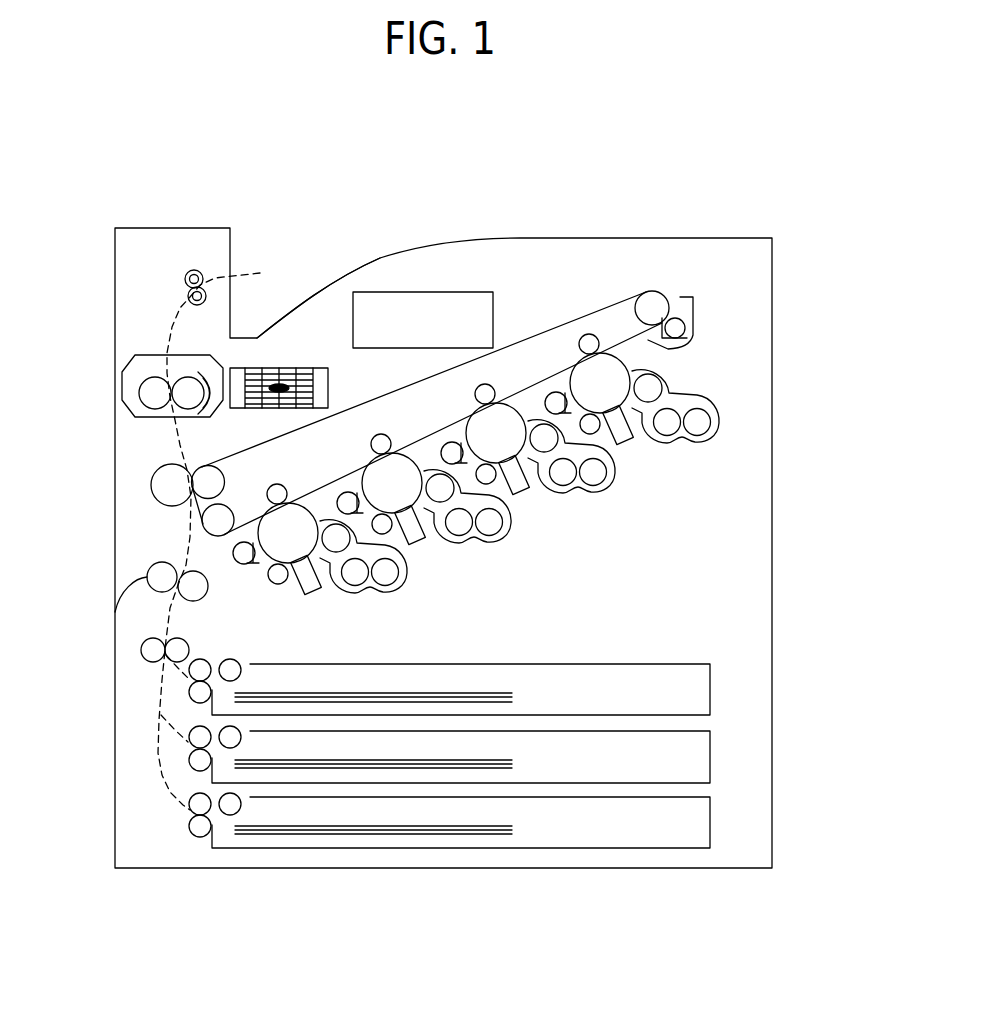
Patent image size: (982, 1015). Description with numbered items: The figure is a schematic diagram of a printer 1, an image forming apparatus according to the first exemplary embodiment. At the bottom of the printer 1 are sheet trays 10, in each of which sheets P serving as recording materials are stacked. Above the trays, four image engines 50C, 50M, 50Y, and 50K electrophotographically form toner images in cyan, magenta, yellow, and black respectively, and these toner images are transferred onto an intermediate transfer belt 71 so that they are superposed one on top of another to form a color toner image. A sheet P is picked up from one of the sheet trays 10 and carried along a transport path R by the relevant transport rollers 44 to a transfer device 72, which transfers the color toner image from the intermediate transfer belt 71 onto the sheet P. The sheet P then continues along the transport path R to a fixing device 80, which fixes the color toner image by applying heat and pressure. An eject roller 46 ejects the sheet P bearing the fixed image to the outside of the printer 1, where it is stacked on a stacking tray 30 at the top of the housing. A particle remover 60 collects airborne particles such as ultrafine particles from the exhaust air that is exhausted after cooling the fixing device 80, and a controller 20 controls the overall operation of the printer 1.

The printer 1 is at (580, 206).
The sheet trays 10 is at (712, 731).
The controller 20 is at (447, 292).
The stacking tray 30 is at (322, 288).
The transport rollers 44 is at (200, 730).
The eject roller 46 is at (185, 291).
The image engine 50K is at (340, 607).
The image engine 50C is at (466, 556).
The image engine 50M is at (569, 510).
The image engine 50Y is at (676, 453).
The particle remover 60 is at (293, 362).
The intermediate transfer belt 71 is at (262, 444).
The transfer device 72 is at (150, 484).
The fixing device 80 is at (139, 376).
The sheet P is at (490, 826).
The transport path R is at (187, 537).